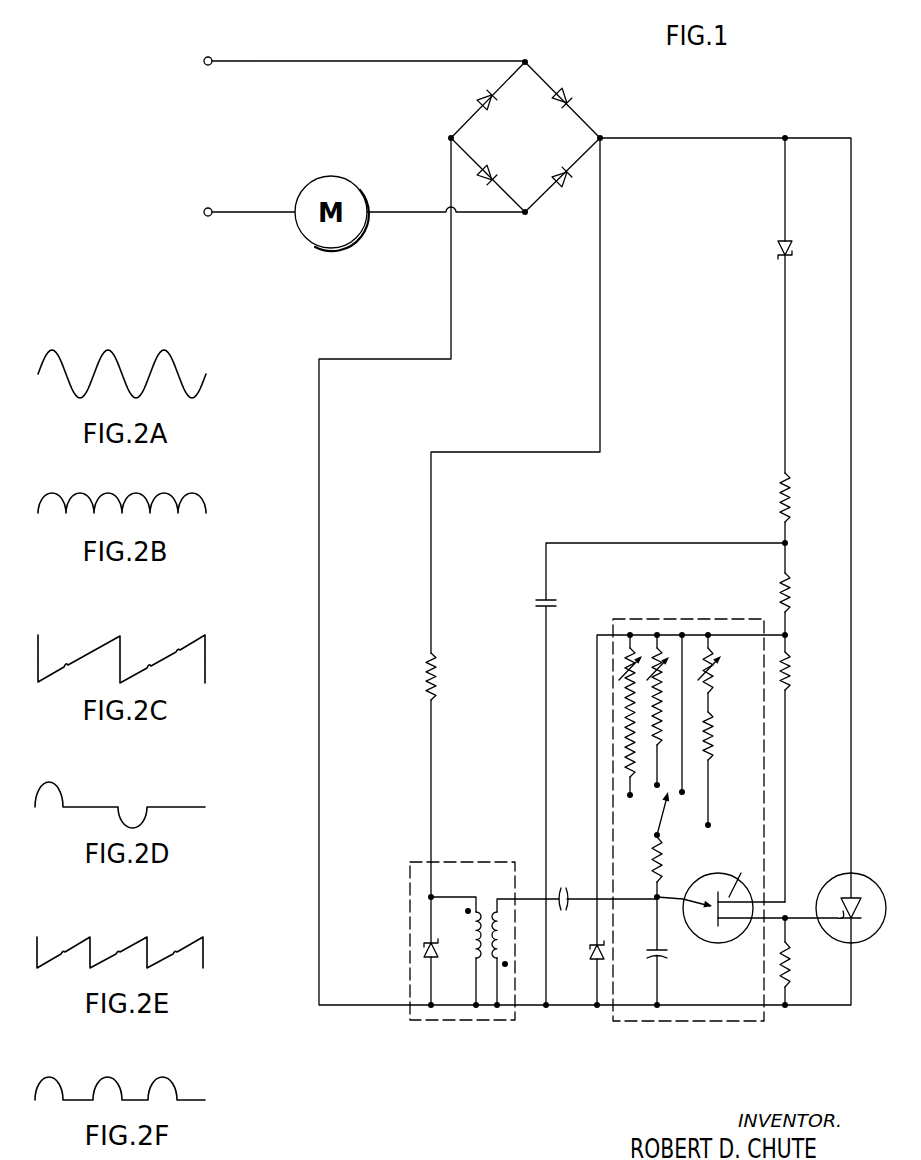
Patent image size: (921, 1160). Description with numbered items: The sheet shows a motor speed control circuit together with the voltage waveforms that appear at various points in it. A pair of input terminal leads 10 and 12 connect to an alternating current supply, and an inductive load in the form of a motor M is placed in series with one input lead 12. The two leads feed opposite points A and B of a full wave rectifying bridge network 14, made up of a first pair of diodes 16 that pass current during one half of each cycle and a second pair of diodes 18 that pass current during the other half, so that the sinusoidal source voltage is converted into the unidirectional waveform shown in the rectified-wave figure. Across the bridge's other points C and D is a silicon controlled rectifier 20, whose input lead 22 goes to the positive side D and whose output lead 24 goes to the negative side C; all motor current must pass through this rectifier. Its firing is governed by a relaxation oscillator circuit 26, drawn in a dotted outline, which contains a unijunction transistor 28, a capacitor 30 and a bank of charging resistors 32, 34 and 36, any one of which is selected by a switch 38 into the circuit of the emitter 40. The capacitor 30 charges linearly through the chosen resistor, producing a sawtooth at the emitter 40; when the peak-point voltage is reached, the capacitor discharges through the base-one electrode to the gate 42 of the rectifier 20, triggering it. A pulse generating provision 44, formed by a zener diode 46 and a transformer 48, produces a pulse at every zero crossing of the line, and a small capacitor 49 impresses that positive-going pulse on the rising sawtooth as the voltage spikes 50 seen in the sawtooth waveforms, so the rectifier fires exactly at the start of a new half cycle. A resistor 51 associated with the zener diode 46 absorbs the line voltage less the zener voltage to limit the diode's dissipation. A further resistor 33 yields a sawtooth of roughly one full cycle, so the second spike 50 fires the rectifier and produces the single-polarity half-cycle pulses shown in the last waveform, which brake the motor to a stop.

In FIG. 1, the input terminal lead 10 is at (334, 61).
In FIG. 1, the input terminal lead 12 is at (257, 212).
In FIG. 1, the full wave rectifying bridge network 14 is at (534, 130).
In FIG. 1, the first pair of diodes 16 is at (557, 92).
In FIG. 1, the second pair of diodes 18 is at (483, 97).
In FIG. 1, the silicon controlled rectifier 20 is at (840, 870).
In FIG. 1, the input lead 22 is at (722, 135).
In FIG. 1, the output lead 24 is at (450, 310).
In FIG. 1, the oscillator circuit 26 is at (700, 618).
In FIG. 1, the unijunction transistor 28 is at (712, 877).
In FIG. 1, the capacitor 30 is at (664, 951).
In FIG. 1, the charging resistor 32 is at (683, 688).
In FIG. 1, the resistor 33 is at (708, 750).
In FIG. 1, the charging resistor 34 is at (657, 703).
In FIG. 1, the charging resistor 36 is at (630, 740).
In FIG. 1, the switch 38 is at (661, 812).
In FIG. 1, the emitter 40 is at (703, 882).
In FIG. 1, the gate 42 is at (800, 960).
In FIG. 1, the pulse generating provision 44 is at (470, 1023).
In FIG. 1, the zener diode 46 is at (422, 942).
In FIG. 1, the transformer 48 is at (487, 894).
In FIG. 1, the capacitor 49 is at (558, 886).
In FIG. 2C, the voltage spike 50 is at (93, 648).
In FIG. 2E, the voltage spike 50 is at (201, 935).
In FIG. 1, the resistor 51 is at (440, 670).